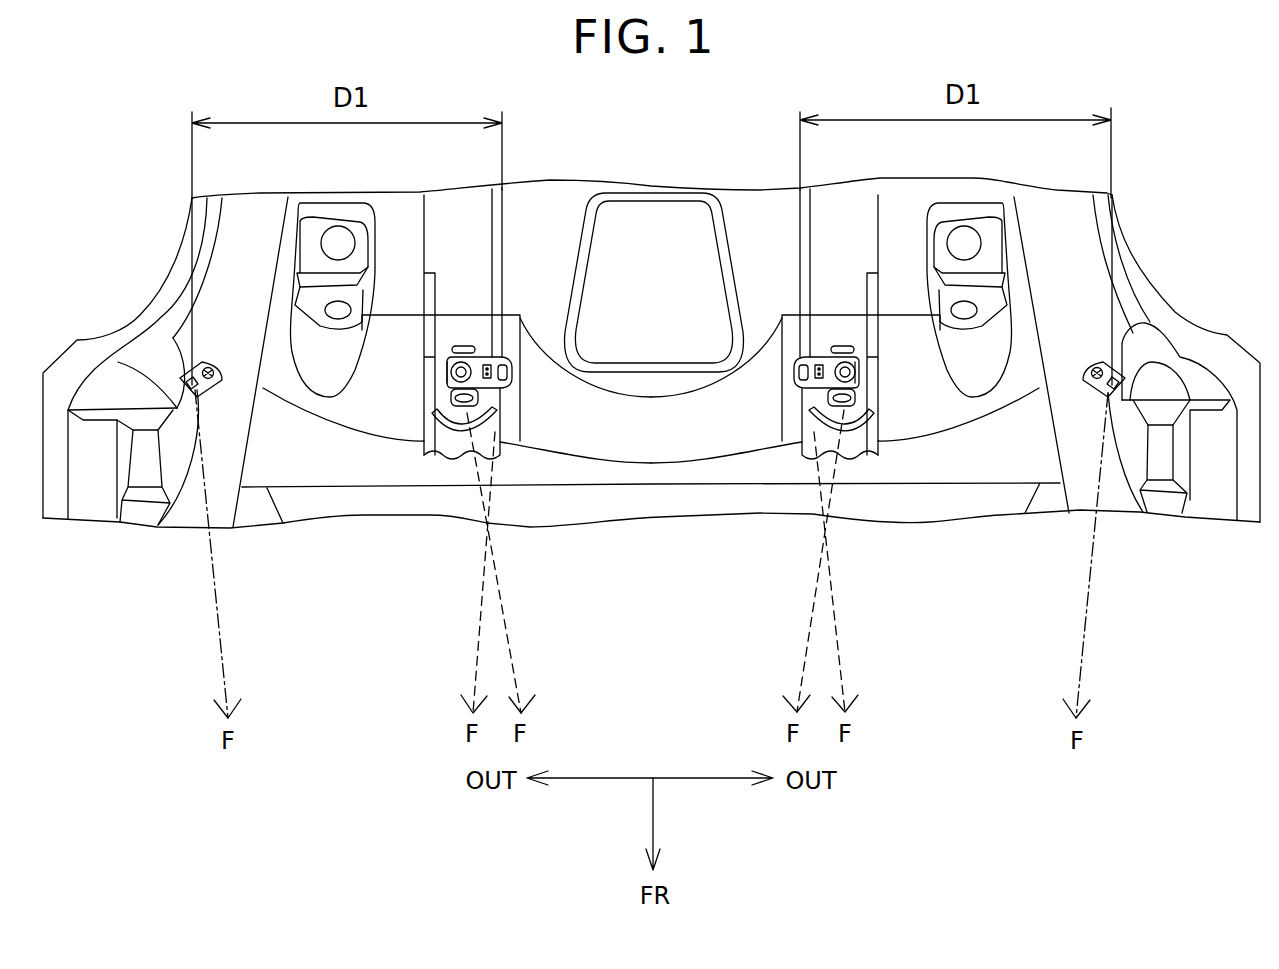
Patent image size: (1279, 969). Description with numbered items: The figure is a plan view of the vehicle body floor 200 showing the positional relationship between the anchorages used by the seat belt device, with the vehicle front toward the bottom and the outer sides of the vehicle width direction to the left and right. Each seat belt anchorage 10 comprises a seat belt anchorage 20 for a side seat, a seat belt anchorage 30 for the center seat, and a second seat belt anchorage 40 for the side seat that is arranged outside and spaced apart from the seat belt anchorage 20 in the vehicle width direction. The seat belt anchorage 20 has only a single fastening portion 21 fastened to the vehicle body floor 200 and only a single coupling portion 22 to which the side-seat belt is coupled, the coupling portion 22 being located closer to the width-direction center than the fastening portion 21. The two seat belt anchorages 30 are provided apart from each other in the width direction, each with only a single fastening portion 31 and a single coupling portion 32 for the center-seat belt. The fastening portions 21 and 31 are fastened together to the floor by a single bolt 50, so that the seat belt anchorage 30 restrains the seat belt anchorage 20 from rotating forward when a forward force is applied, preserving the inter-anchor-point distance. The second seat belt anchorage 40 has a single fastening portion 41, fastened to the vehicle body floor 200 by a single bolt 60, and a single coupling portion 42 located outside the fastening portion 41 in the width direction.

The seat belt anchorage 10 is at (797, 357).
The seat belt anchorage for a side seat 20 is at (827, 357).
The fastening portion 21 is at (855, 360).
The coupling portion 22 is at (797, 373).
The seat belt anchorage for a center seat 30 is at (860, 394).
The fastening portion 31 is at (865, 360).
The coupling portion 32 is at (863, 418).
The second seat belt anchorage for the side seat 40 is at (1094, 388).
The fastening portion 41 is at (1095, 360).
The coupling portion 42 is at (1124, 336).
The bolt 50 is at (866, 374).
The bolt 60 is at (1088, 371).
The vehicle body floor 200 is at (655, 438).